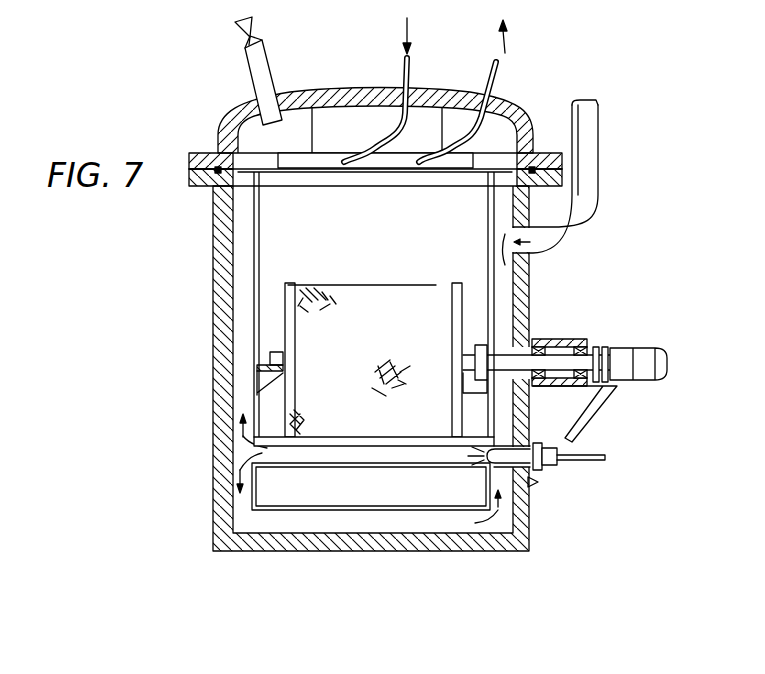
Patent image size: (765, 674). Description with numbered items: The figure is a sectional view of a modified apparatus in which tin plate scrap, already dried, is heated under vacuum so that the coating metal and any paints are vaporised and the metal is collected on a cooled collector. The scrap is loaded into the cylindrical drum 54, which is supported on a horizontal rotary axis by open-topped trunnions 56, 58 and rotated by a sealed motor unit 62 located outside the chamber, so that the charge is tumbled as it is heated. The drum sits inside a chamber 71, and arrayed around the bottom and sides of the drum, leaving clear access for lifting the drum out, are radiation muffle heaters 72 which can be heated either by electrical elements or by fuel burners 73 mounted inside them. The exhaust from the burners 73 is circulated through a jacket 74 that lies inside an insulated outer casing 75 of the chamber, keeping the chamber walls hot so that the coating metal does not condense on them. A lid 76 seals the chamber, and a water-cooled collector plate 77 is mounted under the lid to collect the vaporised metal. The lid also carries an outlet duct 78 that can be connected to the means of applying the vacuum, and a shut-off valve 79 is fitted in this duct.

The cylindrical drum 54 is at (381, 285).
The open-topped trunnion 56 is at (262, 380).
The open-topped trunnion 58 is at (530, 405).
The sealed motor unit 62 is at (647, 380).
The chamber 71 is at (280, 250).
The radiation muffle heater 72 is at (303, 467).
The fuel burner 73 is at (543, 470).
The jacket 74 is at (245, 343).
The insulated outer casing 75 is at (221, 303).
The lid 76 is at (503, 130).
The water-cooled collector plate 77 is at (305, 163).
The outlet duct 78 is at (262, 80).
The shut-off valve 79 is at (252, 20).